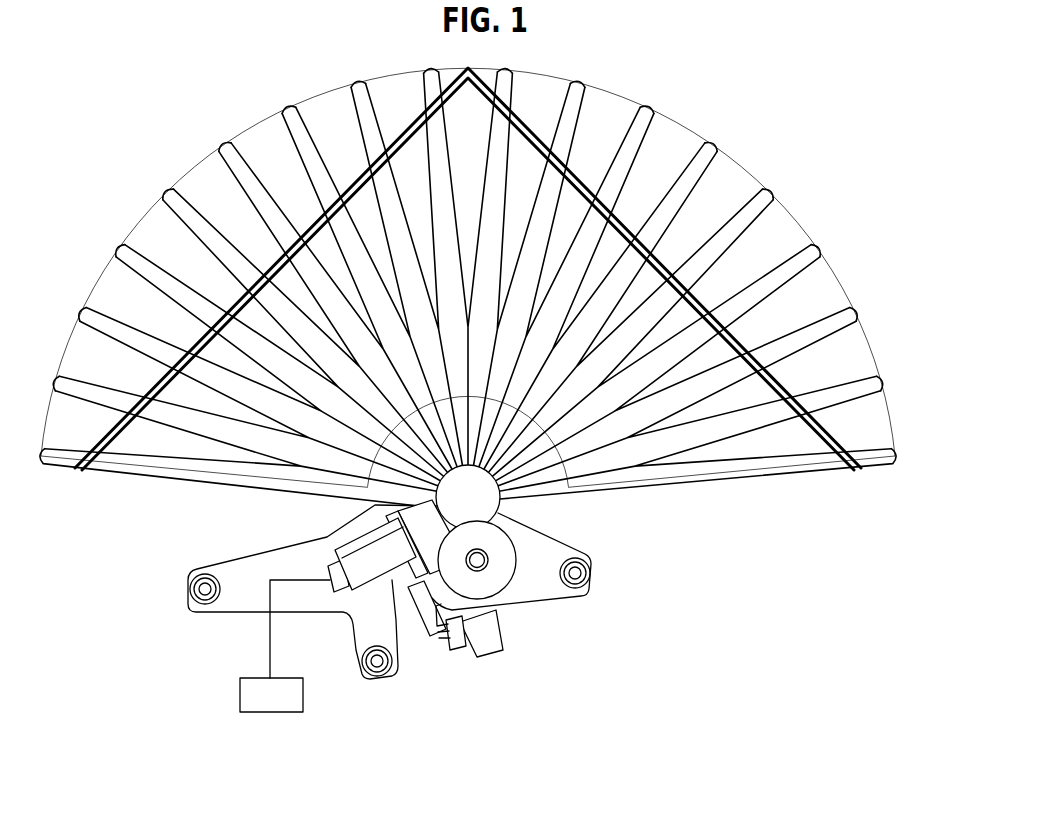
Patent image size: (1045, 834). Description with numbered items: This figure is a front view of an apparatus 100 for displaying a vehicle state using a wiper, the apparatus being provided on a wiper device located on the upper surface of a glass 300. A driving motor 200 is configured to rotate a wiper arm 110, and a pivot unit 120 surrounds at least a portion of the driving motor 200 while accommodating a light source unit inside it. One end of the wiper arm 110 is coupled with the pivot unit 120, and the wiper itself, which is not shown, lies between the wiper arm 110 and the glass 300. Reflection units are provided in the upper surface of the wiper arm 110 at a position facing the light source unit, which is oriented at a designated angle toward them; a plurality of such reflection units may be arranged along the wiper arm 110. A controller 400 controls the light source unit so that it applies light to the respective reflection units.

The apparatus 100 is at (778, 98).
The wiper arm 110 is at (740, 480).
The pivot unit 120 is at (483, 489).
The driving motor 200 is at (358, 582).
The glass 300 is at (838, 275).
The controller 400 is at (240, 700).